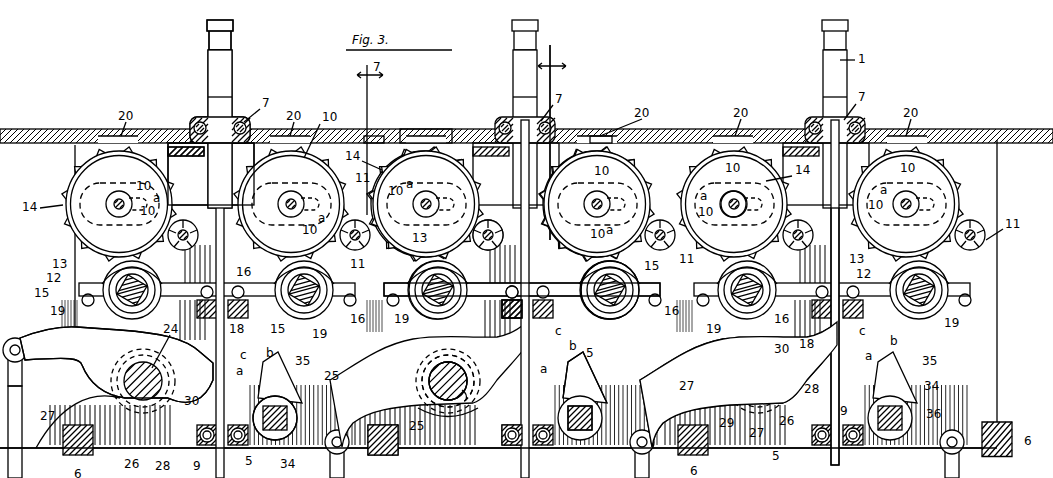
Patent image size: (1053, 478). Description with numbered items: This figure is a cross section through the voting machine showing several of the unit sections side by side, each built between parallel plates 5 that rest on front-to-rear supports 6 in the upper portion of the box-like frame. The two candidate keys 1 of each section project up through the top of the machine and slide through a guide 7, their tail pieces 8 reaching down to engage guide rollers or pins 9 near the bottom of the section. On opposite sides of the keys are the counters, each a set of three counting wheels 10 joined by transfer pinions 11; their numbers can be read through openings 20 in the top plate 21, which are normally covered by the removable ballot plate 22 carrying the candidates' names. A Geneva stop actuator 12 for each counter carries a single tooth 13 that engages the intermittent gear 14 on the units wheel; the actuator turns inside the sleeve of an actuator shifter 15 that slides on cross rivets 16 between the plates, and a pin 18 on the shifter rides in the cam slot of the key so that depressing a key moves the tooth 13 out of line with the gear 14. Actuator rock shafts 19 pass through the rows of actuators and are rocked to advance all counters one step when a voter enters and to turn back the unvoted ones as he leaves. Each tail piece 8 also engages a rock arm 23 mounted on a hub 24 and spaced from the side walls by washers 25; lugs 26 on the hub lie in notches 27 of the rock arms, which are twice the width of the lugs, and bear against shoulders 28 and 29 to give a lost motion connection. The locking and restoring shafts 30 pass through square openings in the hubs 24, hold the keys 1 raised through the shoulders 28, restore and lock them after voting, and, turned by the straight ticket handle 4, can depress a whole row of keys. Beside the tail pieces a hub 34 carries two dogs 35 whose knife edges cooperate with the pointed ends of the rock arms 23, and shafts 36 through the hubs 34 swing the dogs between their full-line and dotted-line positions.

The candidate key 1 is at (245, 67).
The straight ticket key or handle 4 is at (740, 218).
The parallel plates 5 is at (470, 448).
The supports 6 is at (380, 460).
The guide 7 is at (555, 142).
The tail piece 8 is at (830, 462).
The guide rollers or pins 9 is at (512, 445).
The counting wheels 10 is at (426, 204).
The transfer pinions 11 is at (493, 248).
The Geneva stop actuator 12 is at (417, 278).
The tooth 13 is at (588, 270).
The intermittent gear 14 is at (626, 170).
The actuator shifter 15 is at (474, 283).
The cross rivets 16 is at (505, 300).
The pin 18 is at (508, 320).
The actuator rock shafts 19 is at (606, 300).
The openings 20 is at (428, 136).
The top plate 21 is at (375, 136).
The ballot plate 22 is at (602, 134).
The rock arm 23 is at (116, 364).
The hub 24 is at (430, 378).
The washers 25 is at (692, 372).
The lugs 26 is at (462, 402).
The notches 27 is at (449, 416).
The shoulder 28 is at (470, 392).
The shoulder 29 is at (92, 386).
The locking and restoring shaft 30 is at (452, 366).
The hub 34 is at (595, 410).
The dogs 35 is at (592, 375).
The shafts 36 is at (292, 412).